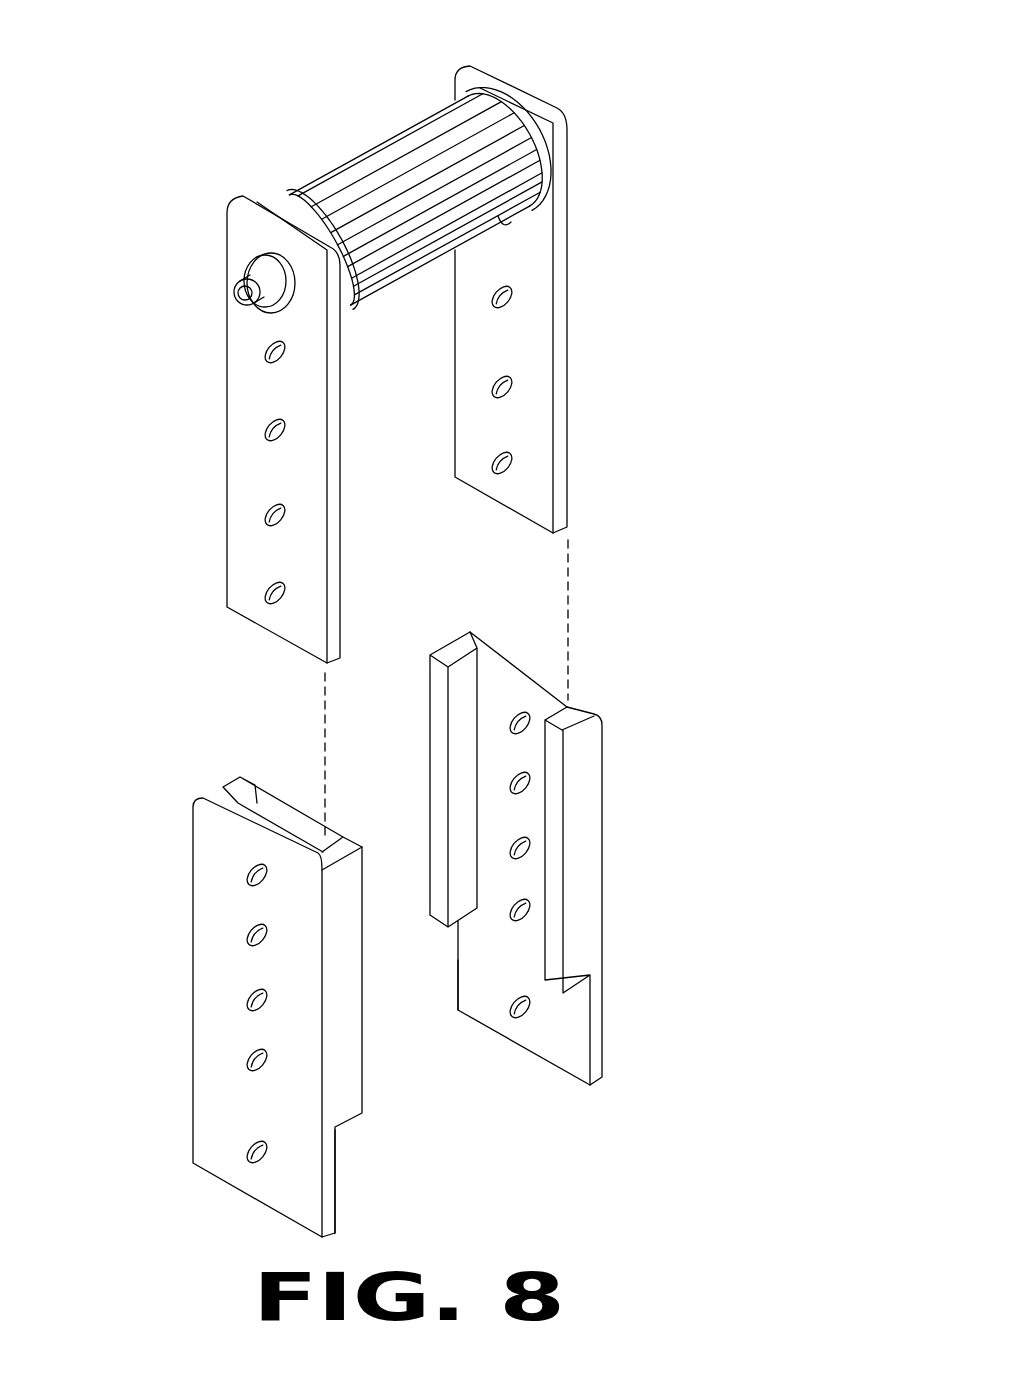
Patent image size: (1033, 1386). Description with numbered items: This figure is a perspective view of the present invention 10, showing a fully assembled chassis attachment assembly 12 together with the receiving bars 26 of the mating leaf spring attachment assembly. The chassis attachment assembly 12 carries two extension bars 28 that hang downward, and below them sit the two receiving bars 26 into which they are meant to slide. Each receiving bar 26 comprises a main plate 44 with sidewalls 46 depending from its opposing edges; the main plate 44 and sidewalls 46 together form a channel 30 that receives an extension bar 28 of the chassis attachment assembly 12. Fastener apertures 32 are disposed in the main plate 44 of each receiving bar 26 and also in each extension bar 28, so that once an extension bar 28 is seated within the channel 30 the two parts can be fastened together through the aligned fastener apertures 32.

The present invention 10 is at (690, 108).
The chassis attachment assembly 12 is at (288, 150).
The receiving bars 26 is at (227, 797).
The extension bars 28 is at (242, 447).
The channel 30 is at (317, 832).
The fastener apertures 32 is at (500, 453).
The main plate 44 is at (487, 987).
The sidewalls 46 is at (434, 1012).